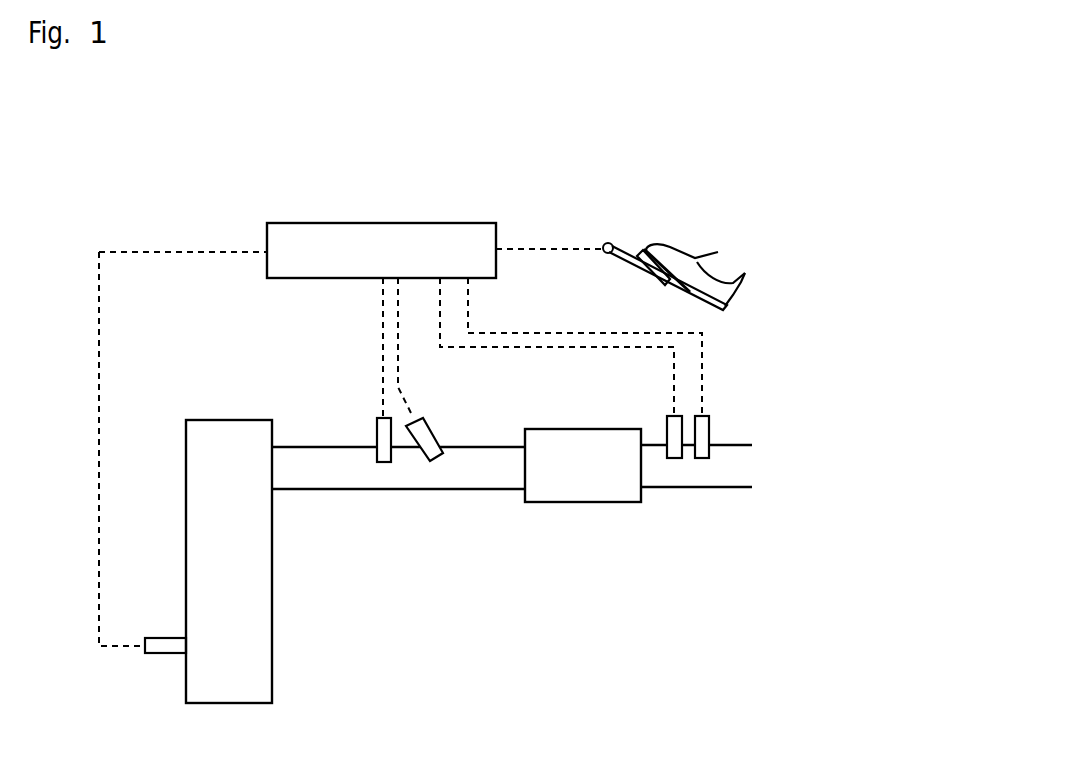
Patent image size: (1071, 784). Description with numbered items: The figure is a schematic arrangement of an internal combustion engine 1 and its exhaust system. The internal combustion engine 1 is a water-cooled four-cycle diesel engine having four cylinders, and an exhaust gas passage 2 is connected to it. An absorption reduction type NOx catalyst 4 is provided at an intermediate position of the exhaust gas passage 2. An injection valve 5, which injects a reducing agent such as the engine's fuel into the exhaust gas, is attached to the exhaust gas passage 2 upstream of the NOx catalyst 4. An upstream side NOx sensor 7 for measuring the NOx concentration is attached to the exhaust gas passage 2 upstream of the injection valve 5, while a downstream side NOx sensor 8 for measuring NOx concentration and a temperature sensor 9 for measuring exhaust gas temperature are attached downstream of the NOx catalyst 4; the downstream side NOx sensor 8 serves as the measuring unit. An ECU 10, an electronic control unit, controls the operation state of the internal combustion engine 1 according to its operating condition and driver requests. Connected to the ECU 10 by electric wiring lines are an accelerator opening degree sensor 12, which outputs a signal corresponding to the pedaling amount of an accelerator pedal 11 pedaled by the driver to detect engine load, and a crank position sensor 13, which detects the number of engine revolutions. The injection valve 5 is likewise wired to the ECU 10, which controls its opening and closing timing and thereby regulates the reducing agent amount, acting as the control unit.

The internal combustion engine 1 is at (273, 663).
The exhaust gas passage 2 is at (370, 490).
The absorption reduction type NOx catalyst 4 is at (590, 503).
The injection valve 5 is at (428, 417).
The upstream side NOx sensor 7 is at (377, 433).
The downstream side NOx sensor 8 is at (667, 430).
The temperature sensor 9 is at (709, 430).
The ECU 10 is at (272, 279).
The accelerator pedal 11 is at (677, 288).
The accelerator opening degree sensor 12 is at (604, 253).
The crank position sensor 13 is at (166, 638).